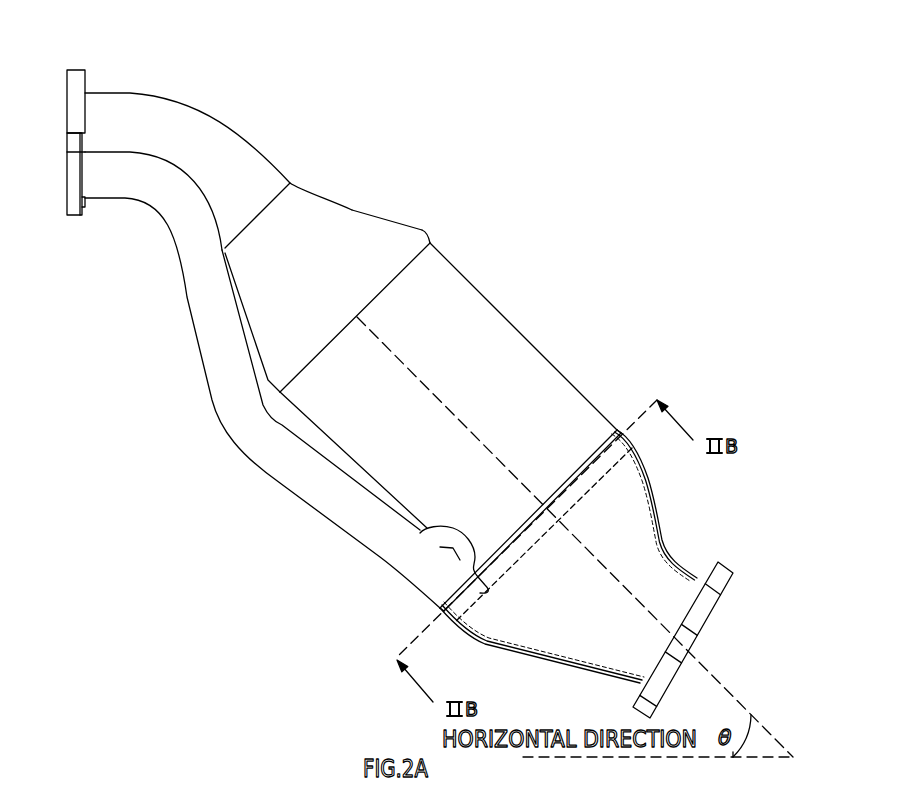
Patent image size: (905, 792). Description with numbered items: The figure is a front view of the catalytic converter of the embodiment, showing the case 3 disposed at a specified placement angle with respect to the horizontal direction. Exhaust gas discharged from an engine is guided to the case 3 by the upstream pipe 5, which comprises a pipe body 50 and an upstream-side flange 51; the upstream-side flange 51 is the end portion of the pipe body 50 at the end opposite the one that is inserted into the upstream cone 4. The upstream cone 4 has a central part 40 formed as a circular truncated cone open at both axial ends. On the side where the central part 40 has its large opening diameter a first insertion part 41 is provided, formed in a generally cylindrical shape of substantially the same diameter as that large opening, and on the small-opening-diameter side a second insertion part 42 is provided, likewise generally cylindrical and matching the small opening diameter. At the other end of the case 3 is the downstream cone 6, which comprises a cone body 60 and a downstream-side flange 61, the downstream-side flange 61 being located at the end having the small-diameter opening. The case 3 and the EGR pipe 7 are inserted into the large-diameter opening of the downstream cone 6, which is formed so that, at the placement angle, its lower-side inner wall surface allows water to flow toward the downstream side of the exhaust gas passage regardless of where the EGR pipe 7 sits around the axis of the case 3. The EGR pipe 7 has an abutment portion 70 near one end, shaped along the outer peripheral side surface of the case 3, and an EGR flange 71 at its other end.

The case 3 is at (515, 332).
The upstream cone 4 is at (375, 260).
The central part 40 is at (352, 210).
The first insertion part 41 is at (456, 219).
The second insertion part 42 is at (290, 183).
The upstream pipe 5 is at (178, 139).
The pipe body 50 is at (107, 93).
The upstream-side flange 51 is at (75, 70).
The downstream cone 6 is at (627, 574).
The cone body 60 is at (657, 503).
The downstream-side flange 61 is at (704, 611).
The EGR pipe 7 is at (222, 423).
The abutment portion 70 is at (427, 530).
The EGR flange 71 is at (75, 215).